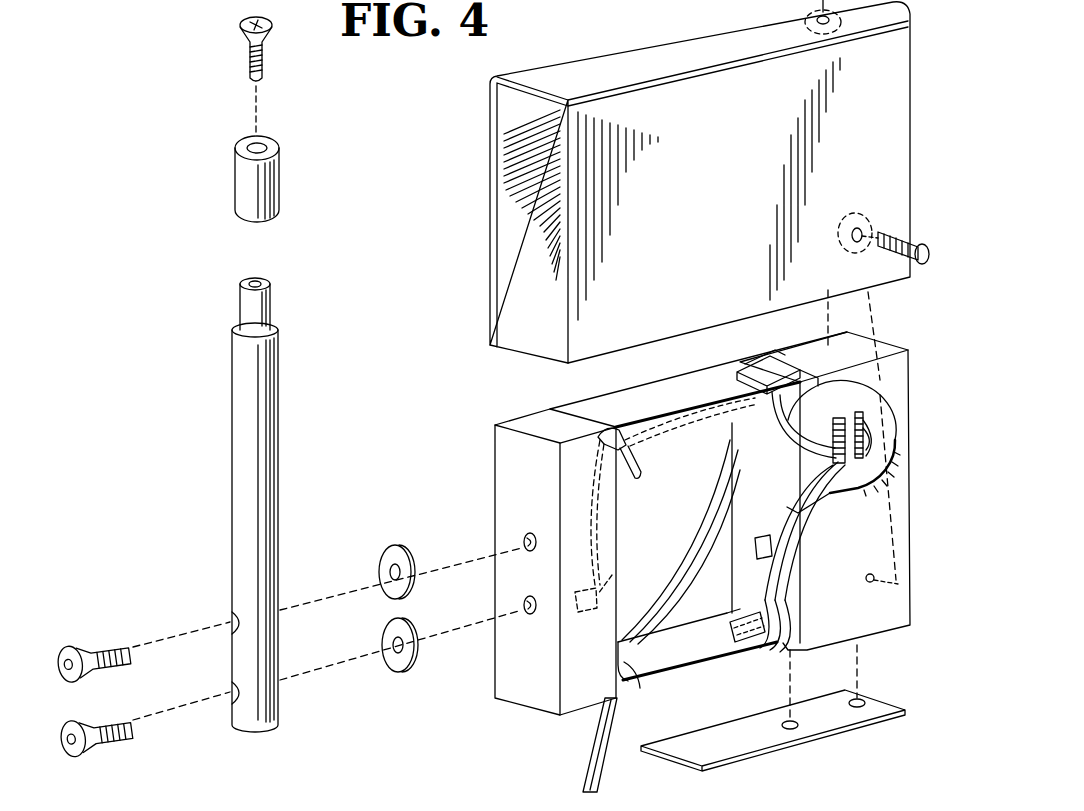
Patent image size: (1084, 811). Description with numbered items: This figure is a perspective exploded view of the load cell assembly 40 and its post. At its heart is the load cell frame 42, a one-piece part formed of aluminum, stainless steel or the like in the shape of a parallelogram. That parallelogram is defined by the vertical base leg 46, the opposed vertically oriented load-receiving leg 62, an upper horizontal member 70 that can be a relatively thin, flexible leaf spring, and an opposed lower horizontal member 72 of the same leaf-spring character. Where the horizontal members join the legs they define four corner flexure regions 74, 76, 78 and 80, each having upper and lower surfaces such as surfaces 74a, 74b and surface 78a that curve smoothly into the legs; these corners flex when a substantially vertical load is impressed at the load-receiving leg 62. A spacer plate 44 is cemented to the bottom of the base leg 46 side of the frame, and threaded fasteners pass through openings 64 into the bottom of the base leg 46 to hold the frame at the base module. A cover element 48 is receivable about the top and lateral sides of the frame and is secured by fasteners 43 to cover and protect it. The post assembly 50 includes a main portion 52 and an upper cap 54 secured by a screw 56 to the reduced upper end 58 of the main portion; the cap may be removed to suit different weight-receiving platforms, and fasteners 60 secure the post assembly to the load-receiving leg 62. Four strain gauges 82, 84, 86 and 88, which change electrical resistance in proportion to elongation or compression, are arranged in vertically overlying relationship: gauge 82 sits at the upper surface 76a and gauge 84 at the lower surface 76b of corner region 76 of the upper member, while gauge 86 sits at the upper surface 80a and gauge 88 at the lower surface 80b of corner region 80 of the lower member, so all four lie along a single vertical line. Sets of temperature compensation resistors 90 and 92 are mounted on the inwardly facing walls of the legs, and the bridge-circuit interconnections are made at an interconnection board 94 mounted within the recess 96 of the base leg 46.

The load cell assembly 40 is at (455, 330).
The load cell frame 42 is at (476, 501).
The fasteners 43 is at (888, 230).
The spacer plate 44 is at (773, 723).
The base leg 46 is at (892, 625).
The cover element 48 is at (492, 175).
The post assembly 50 is at (221, 505).
The main portion 52 is at (248, 478).
The upper cap 54 is at (238, 186).
The screw 56 is at (262, 68).
The reduced upper end 58 is at (288, 304).
The fasteners 60 is at (62, 690).
The load-receiving leg 62 is at (514, 461).
The openings 64 is at (860, 708).
The upper horizontal member 70 is at (655, 402).
The lower horizontal member 72 is at (682, 657).
The corner flexure region 74 is at (612, 448).
The upper surface 74a is at (610, 422).
The lower surface 74b is at (637, 452).
The corner flexure region 76 is at (752, 370).
The upper surface 76a is at (762, 366).
The lower surface 76b is at (818, 380).
The corner flexure region 78 is at (611, 745).
The upper surface 78a is at (646, 666).
The corner flexure region 80 is at (733, 539).
The upper surface 80a is at (768, 603).
The lower surface 80b is at (760, 643).
The strain gauge 82 is at (726, 388).
The strain gauge 84 is at (727, 414).
The strain gauge 86 is at (730, 608).
The strain gauge 88 is at (722, 662).
The temperature compensation resistors 90 is at (616, 578).
The temperature compensation resistors 92 is at (753, 548).
The interconnection board 94 is at (882, 394).
The recess 96 is at (880, 418).